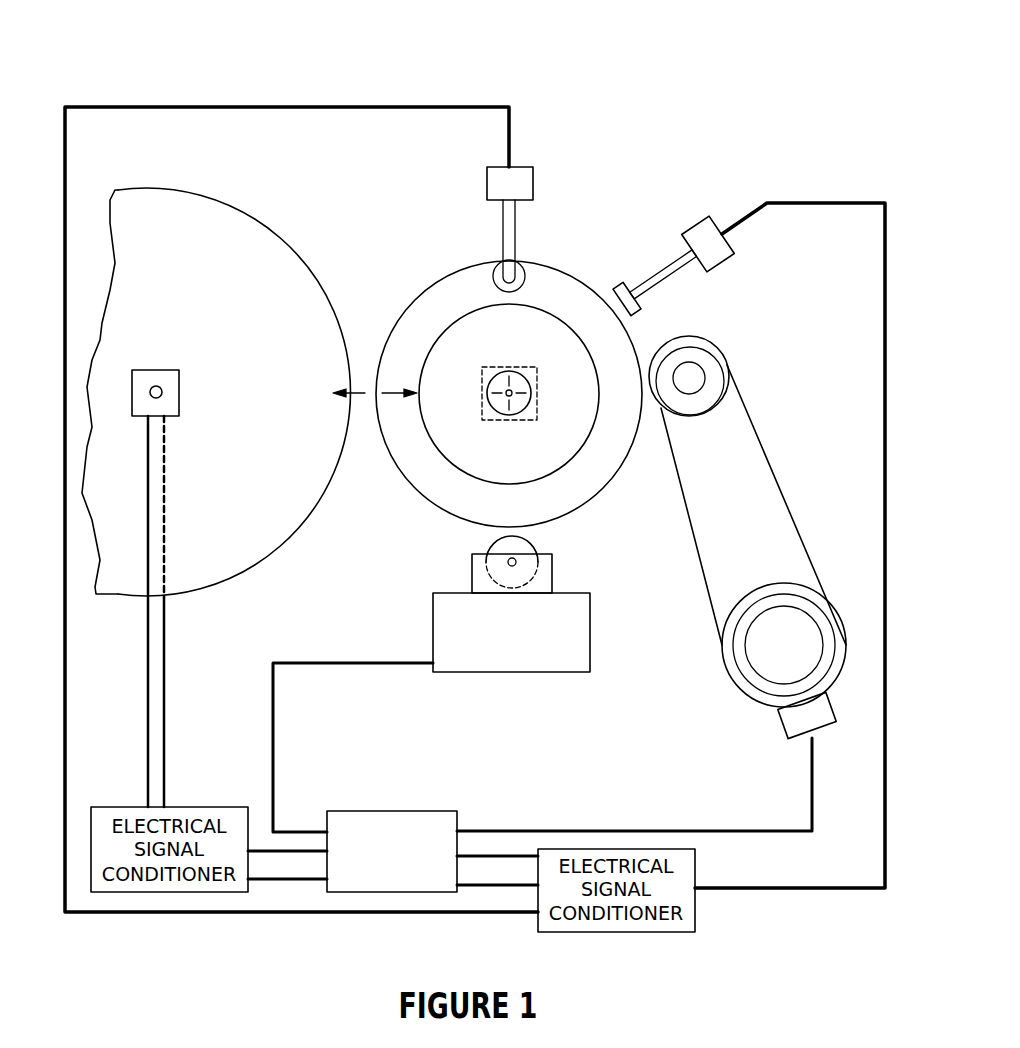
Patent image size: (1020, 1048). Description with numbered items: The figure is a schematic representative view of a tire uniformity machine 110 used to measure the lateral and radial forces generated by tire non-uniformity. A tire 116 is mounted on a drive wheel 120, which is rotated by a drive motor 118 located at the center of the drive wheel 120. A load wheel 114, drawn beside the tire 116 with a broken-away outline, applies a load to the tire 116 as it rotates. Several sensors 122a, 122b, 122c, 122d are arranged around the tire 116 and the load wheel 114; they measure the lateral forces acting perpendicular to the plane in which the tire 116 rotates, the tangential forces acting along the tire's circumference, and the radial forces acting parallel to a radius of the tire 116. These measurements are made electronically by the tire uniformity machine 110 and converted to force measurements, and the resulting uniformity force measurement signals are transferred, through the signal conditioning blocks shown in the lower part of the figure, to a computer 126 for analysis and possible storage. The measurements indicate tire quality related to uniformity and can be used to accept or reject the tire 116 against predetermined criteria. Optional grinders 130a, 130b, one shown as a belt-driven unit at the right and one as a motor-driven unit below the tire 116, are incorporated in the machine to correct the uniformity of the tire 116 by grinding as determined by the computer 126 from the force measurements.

The tire uniformity machine 110 is at (603, 73).
The load wheel 114 is at (237, 200).
The tire 116 is at (487, 262).
The drive motor 118 is at (482, 393).
The drive wheel 120 is at (557, 433).
The sensor 122a is at (694, 222).
The sensor 122b is at (533, 183).
The sensor 122c is at (154, 387).
The sensor 122d is at (172, 396).
The computer 126 is at (457, 818).
The grinder 130a is at (755, 415).
The grinder 130b is at (427, 597).